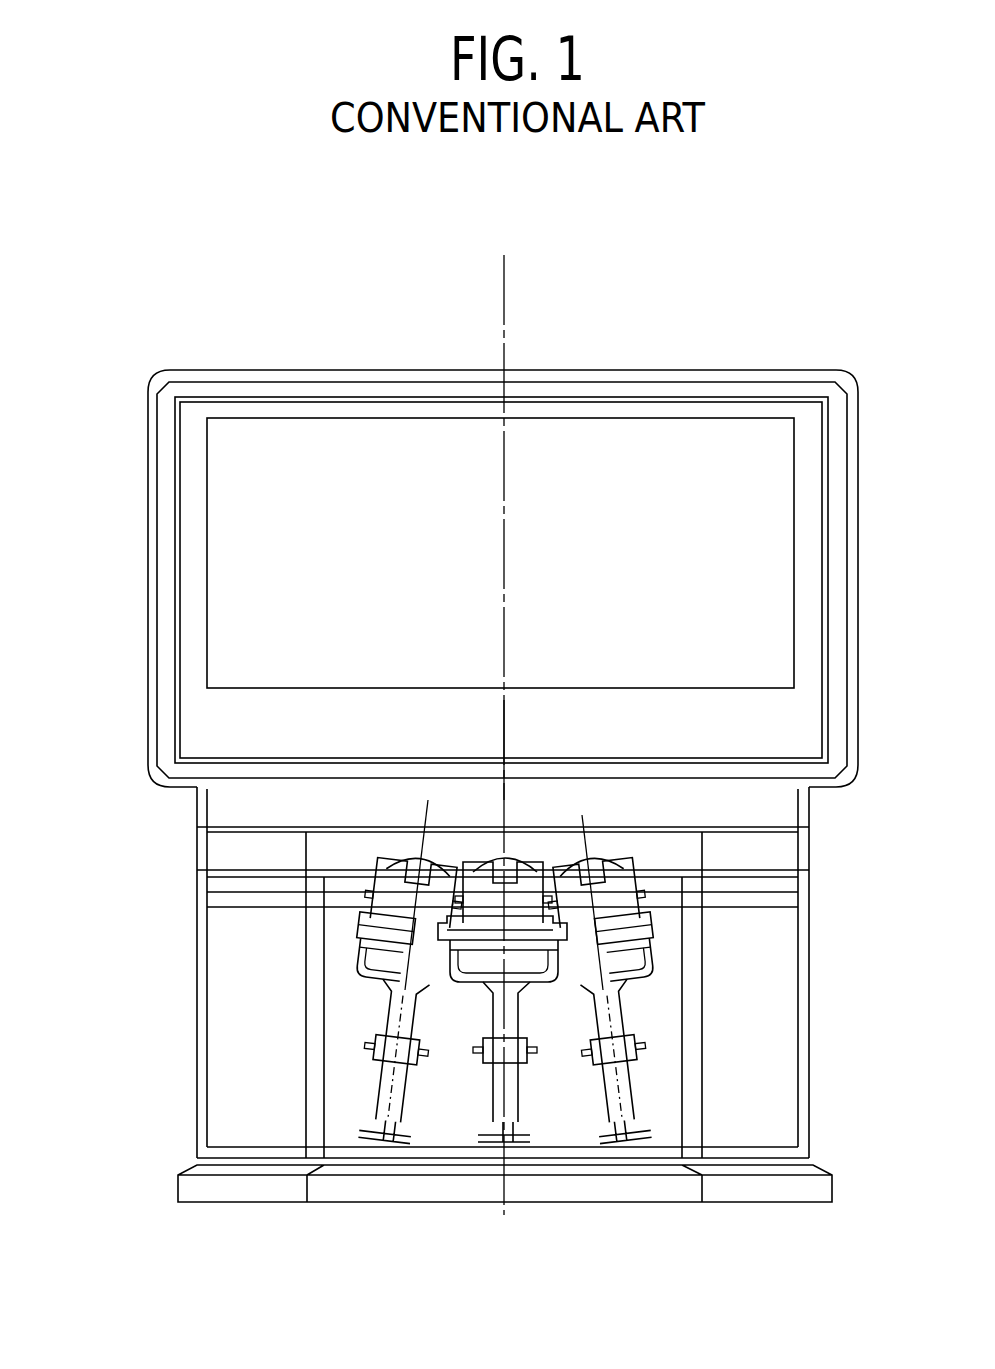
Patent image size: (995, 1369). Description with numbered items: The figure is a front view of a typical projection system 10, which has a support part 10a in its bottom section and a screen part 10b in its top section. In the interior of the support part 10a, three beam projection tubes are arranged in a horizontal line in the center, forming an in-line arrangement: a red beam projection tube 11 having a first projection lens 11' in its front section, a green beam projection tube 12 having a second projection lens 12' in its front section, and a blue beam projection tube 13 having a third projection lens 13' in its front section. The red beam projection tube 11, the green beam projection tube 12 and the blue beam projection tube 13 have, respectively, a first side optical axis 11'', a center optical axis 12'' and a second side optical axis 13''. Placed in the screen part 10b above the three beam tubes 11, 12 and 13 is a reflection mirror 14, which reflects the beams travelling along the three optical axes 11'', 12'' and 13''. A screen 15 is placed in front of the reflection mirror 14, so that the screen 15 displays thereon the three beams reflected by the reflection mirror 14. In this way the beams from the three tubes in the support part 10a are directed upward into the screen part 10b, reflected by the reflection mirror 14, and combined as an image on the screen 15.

The projection system 10 is at (228, 368).
The support part 10a is at (193, 929).
The screen part 10b is at (147, 513).
The red beam projection tube 11 is at (399, 1000).
The first projection lens 11' is at (404, 970).
The first side optical axis 11'' is at (384, 854).
The green beam projection tube 12 is at (492, 1000).
The second projection lens 12' is at (502, 974).
The center optical axis 12'' is at (570, 749).
The blue beam projection tube 13 is at (608, 1000).
The third projection lens 13' is at (633, 967).
The second side optical axis 13'' is at (641, 887).
The reflection mirror 14 is at (318, 417).
The screen 15 is at (183, 742).